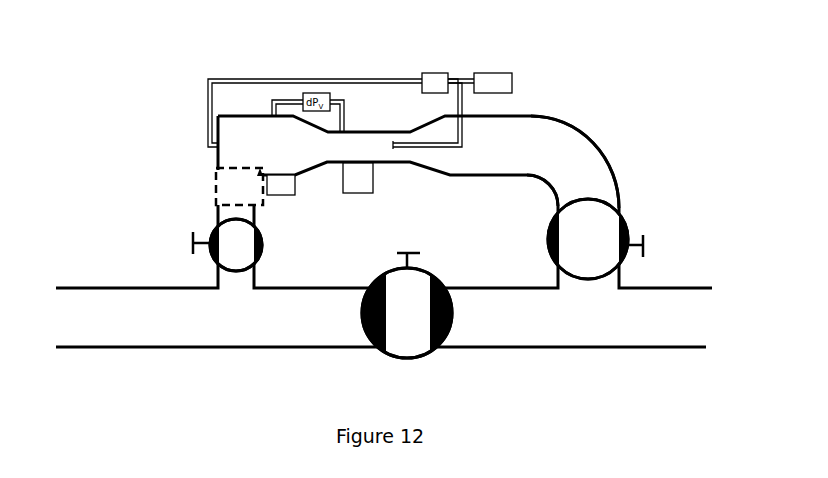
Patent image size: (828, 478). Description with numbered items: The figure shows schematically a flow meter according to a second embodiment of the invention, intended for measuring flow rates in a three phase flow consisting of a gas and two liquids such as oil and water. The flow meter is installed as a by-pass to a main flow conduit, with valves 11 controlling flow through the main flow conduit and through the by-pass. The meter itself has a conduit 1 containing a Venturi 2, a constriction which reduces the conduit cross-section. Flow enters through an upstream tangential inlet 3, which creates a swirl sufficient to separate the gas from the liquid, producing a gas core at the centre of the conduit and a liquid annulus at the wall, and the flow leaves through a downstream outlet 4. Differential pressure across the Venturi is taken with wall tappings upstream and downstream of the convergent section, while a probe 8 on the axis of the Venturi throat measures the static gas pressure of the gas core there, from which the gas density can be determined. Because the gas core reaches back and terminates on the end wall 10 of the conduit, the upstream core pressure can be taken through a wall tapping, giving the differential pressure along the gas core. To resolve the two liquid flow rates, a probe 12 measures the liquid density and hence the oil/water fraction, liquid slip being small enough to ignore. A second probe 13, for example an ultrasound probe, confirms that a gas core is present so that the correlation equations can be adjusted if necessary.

The conduit 1 is at (367, 102).
The Venturi 2 is at (390, 170).
The upstream tangential inlet 3 is at (217, 177).
The downstream outlet 4 is at (560, 152).
The probe 8 is at (405, 147).
The end wall 10 is at (205, 155).
The valves 11 is at (210, 255).
The probe 12 is at (353, 193).
The second probe 13 is at (278, 195).